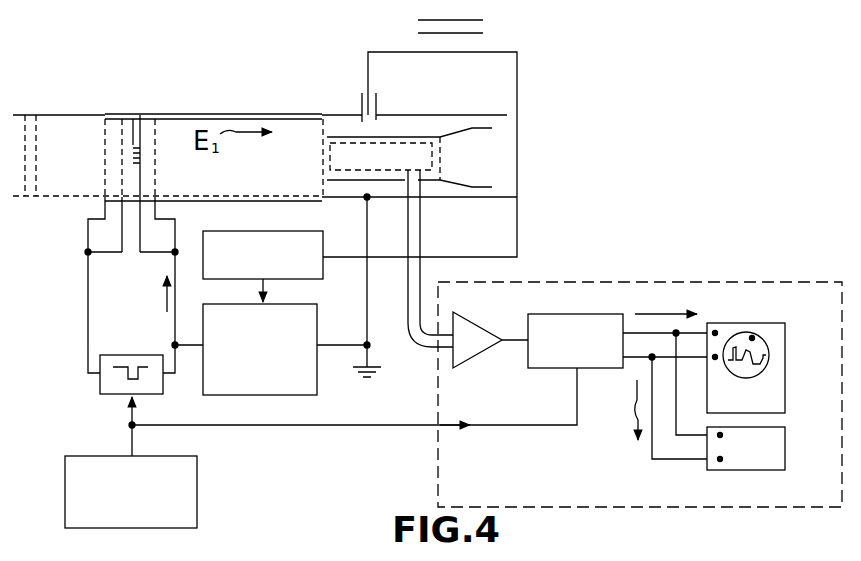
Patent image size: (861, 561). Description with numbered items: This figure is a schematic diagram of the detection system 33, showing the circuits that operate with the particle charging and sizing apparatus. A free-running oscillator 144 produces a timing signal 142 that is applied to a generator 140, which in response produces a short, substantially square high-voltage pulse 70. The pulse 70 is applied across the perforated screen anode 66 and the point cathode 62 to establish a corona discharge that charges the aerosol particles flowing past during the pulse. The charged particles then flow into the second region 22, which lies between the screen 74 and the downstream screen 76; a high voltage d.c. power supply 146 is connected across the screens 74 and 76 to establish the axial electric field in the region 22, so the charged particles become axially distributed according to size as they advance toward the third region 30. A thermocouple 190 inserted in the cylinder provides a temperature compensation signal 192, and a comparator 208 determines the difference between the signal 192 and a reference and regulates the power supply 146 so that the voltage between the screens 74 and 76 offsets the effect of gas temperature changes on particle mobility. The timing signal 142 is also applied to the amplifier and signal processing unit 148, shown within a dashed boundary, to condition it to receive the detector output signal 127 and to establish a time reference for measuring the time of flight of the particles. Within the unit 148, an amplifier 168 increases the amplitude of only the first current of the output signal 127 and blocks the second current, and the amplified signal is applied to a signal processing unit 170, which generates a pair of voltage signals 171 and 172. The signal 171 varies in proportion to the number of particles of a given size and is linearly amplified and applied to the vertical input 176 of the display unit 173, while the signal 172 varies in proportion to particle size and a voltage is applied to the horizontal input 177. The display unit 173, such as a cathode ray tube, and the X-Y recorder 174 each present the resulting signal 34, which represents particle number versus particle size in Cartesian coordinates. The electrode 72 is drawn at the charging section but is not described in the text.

The second region 22 is at (284, 130).
The third region 30 is at (326, 134).
The system 33 is at (82, 302).
The output signal 34 is at (752, 337).
The point cathode 62 is at (134, 145).
The screen anode 66 is at (122, 135).
The square voltage pulse 70 is at (167, 297).
The electrode 72 is at (105, 135).
The screen 74 is at (157, 133).
The screen 76 is at (322, 162).
The output signal 127 is at (399, 326).
The generator 140 is at (100, 384).
The timing signal 142 is at (117, 412).
The free-running oscillator 144 is at (68, 456).
The high voltage d.c. power supply 146 is at (317, 388).
The amplifier and signal processing unit 148 is at (598, 281).
The amplifier 168 is at (478, 326).
The signal processing unit 170 is at (541, 368).
The voltage signal 171 is at (652, 314).
The voltage signal 172 is at (634, 396).
The display unit 173 is at (772, 385).
The X-Y recorder 174 is at (772, 443).
The vertical input 176 is at (715, 332).
The horizontal input 177 is at (715, 358).
The thermocouple 190 is at (377, 101).
The temperature compensation signal 192 is at (470, 34).
The comparator 208 is at (241, 231).